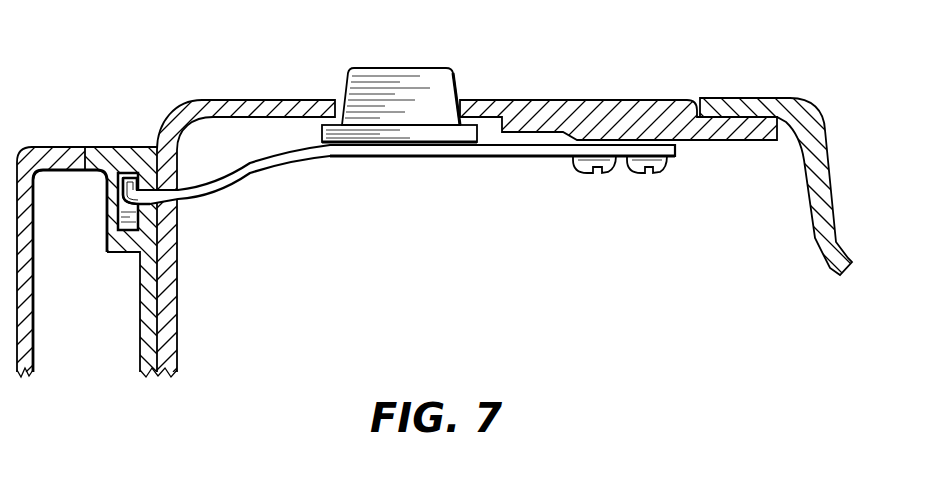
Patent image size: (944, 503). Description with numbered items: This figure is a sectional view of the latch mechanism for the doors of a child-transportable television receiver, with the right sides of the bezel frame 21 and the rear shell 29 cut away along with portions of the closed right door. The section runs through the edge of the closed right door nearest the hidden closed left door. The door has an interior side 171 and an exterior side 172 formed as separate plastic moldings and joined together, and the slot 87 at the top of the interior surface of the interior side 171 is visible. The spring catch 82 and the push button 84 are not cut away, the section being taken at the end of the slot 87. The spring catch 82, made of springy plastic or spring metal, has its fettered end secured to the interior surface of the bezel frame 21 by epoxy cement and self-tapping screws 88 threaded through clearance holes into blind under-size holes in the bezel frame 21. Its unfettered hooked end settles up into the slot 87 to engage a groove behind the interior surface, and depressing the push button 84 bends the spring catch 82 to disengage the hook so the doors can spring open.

The bezel frame 21 is at (601, 105).
The rear shell 29 is at (757, 98).
The spring catch 82 is at (257, 172).
The push button 84 is at (435, 68).
The slot 87 is at (118, 227).
The self-tapping screws 88 is at (607, 172).
The interior side 171 is at (125, 147).
The exterior side 172 is at (57, 147).